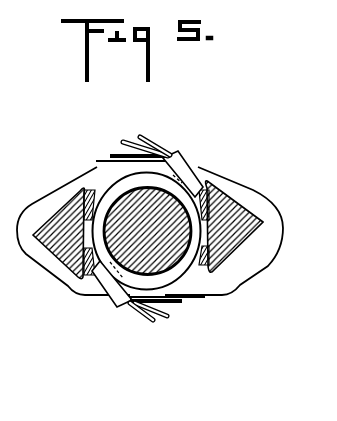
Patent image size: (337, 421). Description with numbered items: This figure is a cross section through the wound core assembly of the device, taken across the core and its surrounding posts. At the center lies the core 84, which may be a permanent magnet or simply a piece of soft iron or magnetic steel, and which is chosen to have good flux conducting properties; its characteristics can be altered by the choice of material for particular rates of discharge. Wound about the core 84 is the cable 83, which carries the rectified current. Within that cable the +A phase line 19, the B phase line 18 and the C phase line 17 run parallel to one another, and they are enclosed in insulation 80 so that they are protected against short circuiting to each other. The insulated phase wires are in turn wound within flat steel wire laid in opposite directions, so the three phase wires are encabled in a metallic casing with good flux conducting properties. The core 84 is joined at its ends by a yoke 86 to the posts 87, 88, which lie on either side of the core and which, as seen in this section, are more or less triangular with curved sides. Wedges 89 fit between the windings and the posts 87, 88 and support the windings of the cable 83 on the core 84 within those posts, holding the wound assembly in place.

The C phase line 17 is at (145, 137).
The B phase line 18 is at (128, 141).
The +A phase line 19 is at (112, 153).
The insulation 80 is at (179, 154).
The cable 83 is at (102, 178).
The core 84 is at (170, 263).
The yoke 86 is at (70, 278).
The post 87 is at (233, 247).
The post 88 is at (53, 240).
The wedge 89 is at (203, 186).